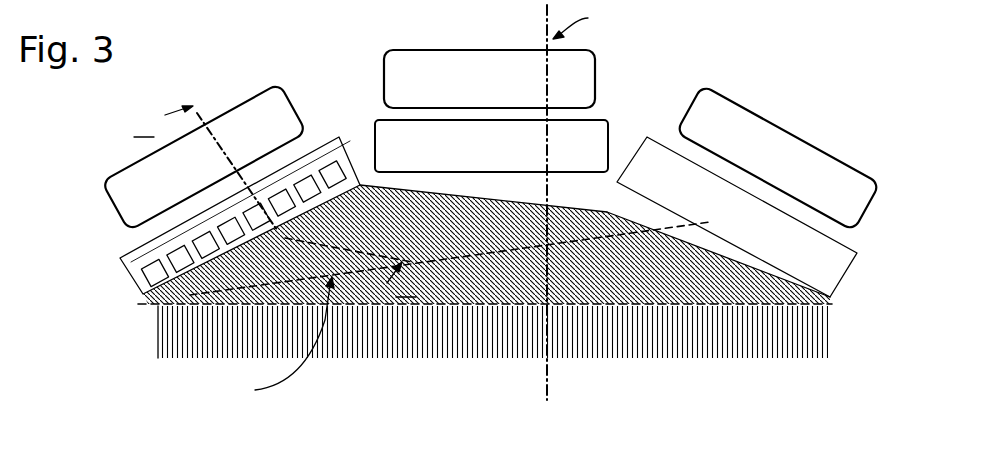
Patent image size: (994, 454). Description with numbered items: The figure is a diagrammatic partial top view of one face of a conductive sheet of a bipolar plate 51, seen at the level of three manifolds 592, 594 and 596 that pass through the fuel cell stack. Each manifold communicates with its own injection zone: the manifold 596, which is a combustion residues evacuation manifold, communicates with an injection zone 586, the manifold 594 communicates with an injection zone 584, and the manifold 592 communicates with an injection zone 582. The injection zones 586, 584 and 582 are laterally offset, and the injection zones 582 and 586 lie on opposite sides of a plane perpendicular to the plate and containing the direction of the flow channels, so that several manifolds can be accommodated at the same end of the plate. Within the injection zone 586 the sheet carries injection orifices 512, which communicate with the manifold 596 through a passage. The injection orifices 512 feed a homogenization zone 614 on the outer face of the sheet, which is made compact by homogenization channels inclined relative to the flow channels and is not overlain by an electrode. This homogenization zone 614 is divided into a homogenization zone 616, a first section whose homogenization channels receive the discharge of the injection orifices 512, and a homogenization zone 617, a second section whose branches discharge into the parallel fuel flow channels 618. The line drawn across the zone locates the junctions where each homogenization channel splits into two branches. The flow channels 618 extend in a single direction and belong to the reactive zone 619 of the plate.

The bipolar plate 51 is at (815, 80).
The injection orifices 512 is at (180, 258).
The injection zone 582 is at (692, 197).
The injection zone 584 is at (513, 164).
The injection zone 586 is at (135, 278).
The manifold 592 is at (771, 154).
The manifold 594 is at (513, 95).
The combustion residues evacuation manifold 596 is at (216, 174).
The homogenization zone 614 is at (607, 205).
The homogenization zone 616 is at (370, 197).
The homogenization zone 617 is at (737, 285).
The fuel flow channels 618 is at (823, 360).
The reactive zone 619 is at (150, 346).